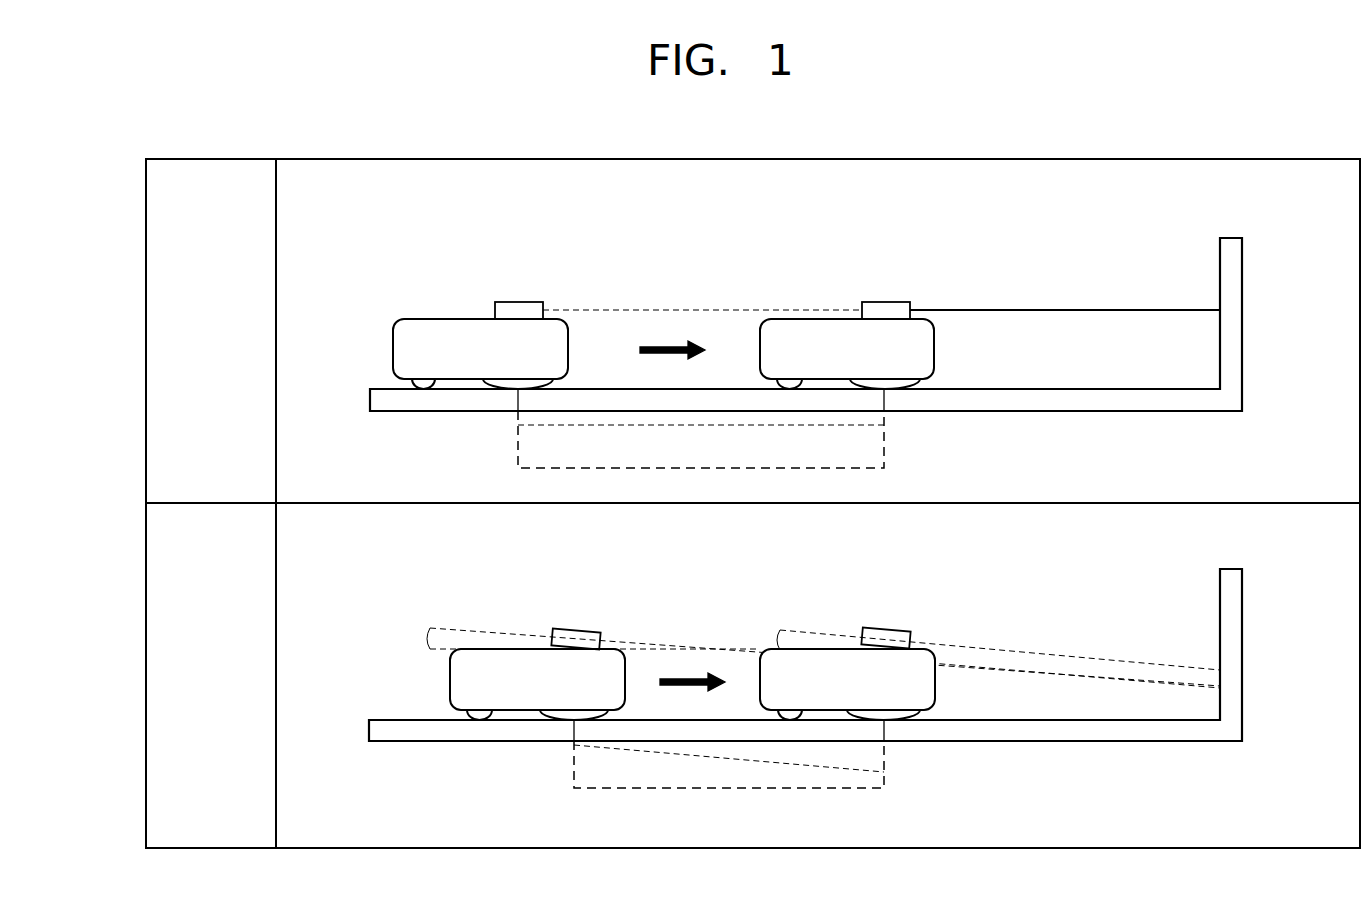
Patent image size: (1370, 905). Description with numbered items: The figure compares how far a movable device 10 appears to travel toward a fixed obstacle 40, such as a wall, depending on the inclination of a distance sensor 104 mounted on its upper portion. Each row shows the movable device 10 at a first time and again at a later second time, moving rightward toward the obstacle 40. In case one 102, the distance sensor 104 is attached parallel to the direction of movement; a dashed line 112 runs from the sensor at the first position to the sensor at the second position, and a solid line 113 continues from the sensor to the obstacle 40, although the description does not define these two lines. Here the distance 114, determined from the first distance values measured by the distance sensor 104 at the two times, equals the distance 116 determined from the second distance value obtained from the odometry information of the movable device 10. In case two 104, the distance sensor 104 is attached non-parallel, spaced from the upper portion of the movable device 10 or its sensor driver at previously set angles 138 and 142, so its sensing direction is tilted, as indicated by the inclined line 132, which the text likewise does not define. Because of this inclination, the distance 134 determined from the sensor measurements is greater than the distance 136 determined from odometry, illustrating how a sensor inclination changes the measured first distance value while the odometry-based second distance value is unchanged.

The movable device 10 is at (437, 318).
The obstacle 40 is at (1243, 287).
The case1 102 is at (146, 330).
The distance sensor 104 is at (520, 302).
The sensor reference line 112 is at (669, 309).
The sensing line to wall 113 is at (1051, 309).
The distance 114 is at (845, 425).
The distance 116 is at (845, 468).
The tilted sensing line 132 is at (645, 640).
The distance 134 is at (770, 763).
The distance 136 is at (650, 789).
The previously set angle 138 is at (426, 640).
The previously set angle 142 is at (777, 640).